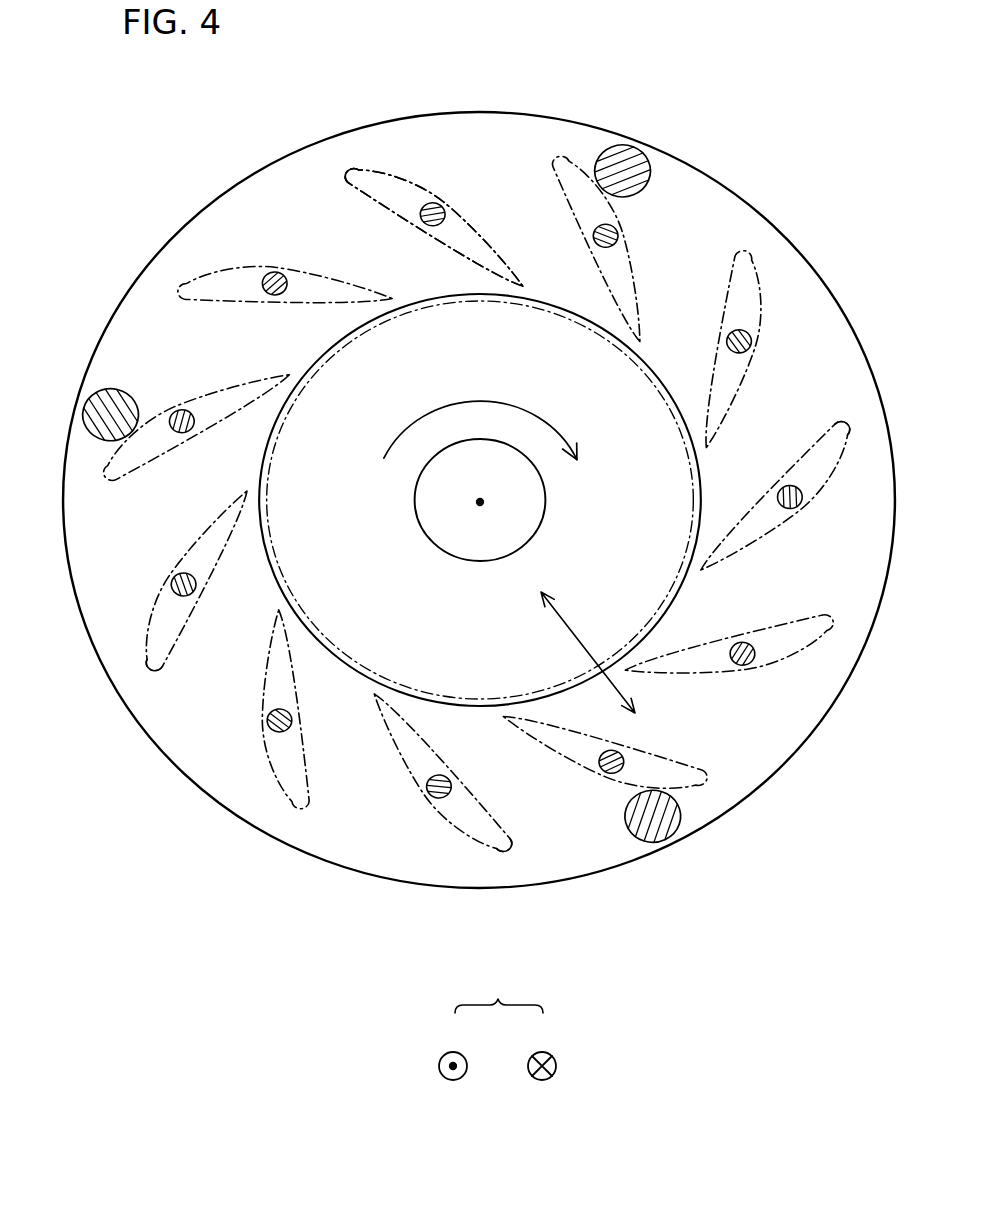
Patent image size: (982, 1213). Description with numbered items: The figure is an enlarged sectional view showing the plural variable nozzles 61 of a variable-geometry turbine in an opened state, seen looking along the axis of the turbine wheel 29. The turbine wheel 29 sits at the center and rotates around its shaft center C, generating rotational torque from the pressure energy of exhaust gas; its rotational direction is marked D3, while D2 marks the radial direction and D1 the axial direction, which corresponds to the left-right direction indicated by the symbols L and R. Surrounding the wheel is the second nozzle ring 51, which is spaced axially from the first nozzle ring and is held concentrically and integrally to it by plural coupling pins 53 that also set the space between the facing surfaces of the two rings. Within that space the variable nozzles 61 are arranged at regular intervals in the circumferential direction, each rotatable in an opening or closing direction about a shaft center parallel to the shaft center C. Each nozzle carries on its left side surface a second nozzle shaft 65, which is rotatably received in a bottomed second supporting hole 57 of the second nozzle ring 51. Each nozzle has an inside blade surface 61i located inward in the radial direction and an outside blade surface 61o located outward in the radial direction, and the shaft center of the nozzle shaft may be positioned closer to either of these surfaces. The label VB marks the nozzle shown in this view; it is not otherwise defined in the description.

The second nozzle ring 51 is at (288, 156).
The turbine wheel 29 is at (420, 303).
The inside blade surface 61i is at (484, 296).
The outside blade surface 61o is at (366, 168).
The variable nozzle 61 is at (482, 226).
The second supporting hole 57 is at (425, 213).
The second nozzle shaft 65 is at (428, 205).
The coupling pin 53 is at (622, 147).
The blade assembly VB is at (404, 148).
The shaft center C is at (483, 503).
The axial direction D1 is at (499, 992).
The radial direction D2 is at (588, 652).
The rotational direction D3 is at (536, 412).
The right direction R is at (453, 1049).
The left direction L is at (542, 1049).